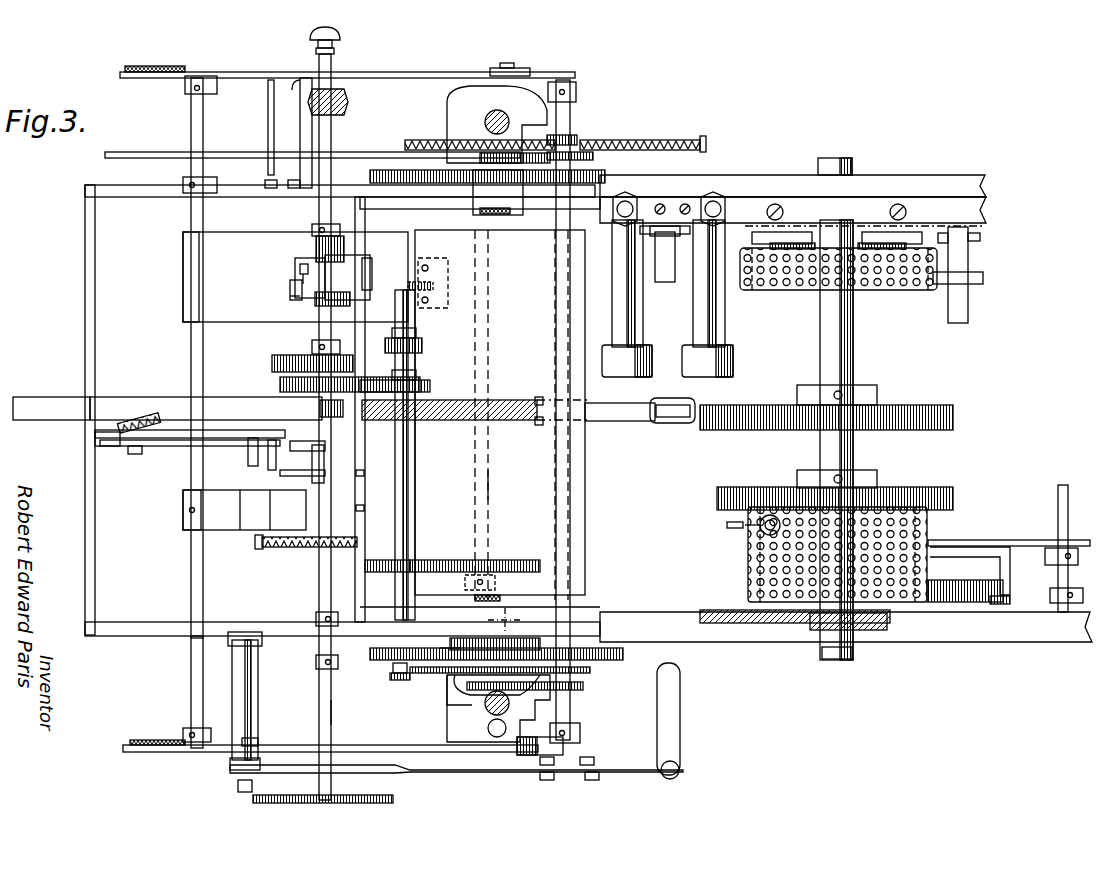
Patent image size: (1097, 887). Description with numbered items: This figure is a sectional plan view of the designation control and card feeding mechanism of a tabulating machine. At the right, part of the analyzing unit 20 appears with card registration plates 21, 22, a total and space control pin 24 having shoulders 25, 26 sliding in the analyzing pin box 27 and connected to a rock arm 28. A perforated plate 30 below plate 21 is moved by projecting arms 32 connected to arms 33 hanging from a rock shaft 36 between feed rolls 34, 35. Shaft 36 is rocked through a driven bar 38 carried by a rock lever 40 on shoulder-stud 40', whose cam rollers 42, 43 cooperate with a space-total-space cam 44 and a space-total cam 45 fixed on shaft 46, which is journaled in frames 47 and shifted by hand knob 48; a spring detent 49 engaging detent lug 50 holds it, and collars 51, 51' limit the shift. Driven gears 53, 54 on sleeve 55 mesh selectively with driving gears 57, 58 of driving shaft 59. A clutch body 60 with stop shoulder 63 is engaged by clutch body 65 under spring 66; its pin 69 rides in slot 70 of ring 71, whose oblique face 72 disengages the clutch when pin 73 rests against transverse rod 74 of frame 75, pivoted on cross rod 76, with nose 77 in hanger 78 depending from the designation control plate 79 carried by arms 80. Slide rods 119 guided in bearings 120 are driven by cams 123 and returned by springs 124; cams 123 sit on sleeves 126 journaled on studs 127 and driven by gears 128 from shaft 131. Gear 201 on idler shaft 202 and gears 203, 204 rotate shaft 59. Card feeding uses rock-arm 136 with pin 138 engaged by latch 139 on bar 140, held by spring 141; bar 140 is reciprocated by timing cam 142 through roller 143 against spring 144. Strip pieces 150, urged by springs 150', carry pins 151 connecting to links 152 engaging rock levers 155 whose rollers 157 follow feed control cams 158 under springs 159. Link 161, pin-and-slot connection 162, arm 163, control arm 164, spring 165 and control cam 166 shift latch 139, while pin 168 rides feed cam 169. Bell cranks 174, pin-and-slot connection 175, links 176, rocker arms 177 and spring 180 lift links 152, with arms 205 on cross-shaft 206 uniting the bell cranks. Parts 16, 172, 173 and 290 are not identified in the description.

The rod 16 is at (191, 692).
The analyzing unit 20 is at (871, 440).
The card registration plate 21 is at (782, 290).
The card registration plate 22 is at (920, 560).
The total and space control pin 24 is at (740, 526).
The shoulder 25 is at (760, 530).
The shoulder 26 is at (764, 532).
The analyzing pin box 27 is at (910, 604).
The rock arm 28 is at (985, 540).
The perforated plate 30 is at (973, 248).
The projecting arms 32 is at (737, 233).
The arms 33 is at (648, 232).
The feed roll 34 is at (640, 332).
The feed roll 35 is at (690, 366).
The rock shaft 36 is at (665, 283).
The driven bar 38 is at (450, 775).
The rock lever 40 is at (260, 774).
The shoulder-stud 40' is at (261, 696).
The cam roller 42 is at (237, 786).
The cam roller 43 is at (257, 744).
The space-total-space cam 44 is at (390, 798).
The space-total cam 45 is at (385, 745).
The shaft 46 is at (332, 713).
The frames 47 is at (150, 192).
The hand knob 48 is at (345, 40).
The spring detent 49 is at (275, 115).
The detent lug 50 is at (349, 103).
The collar 51 is at (310, 613).
The collar 51' is at (309, 664).
The driven gear 53 is at (272, 360).
The driven gear 54 is at (282, 385).
The sleeve 55 is at (320, 329).
The driving gear 57 is at (422, 345).
The driving gear 58 is at (430, 385).
The driving shaft 59 is at (415, 490).
The clutch body 60 is at (350, 299).
The annular stop shoulder 63 is at (295, 292).
The clutch body 65 is at (318, 242).
The spring 66 is at (320, 240).
The pin 69 is at (300, 270).
The slot 70 is at (298, 262).
The ring 71 is at (290, 298).
The oblique face 72 is at (302, 280).
The pin 73 is at (360, 274).
The transverse rod 74 is at (350, 263).
The frame 75 is at (224, 245).
The cross rod 76 is at (191, 352).
The nose 77 is at (435, 286).
The U-shaped hanger 78 is at (440, 268).
The designation control plate 79 is at (500, 415).
The arms 80 is at (497, 215).
The operating slide rods 119 is at (485, 120).
The upper bearing 120 is at (448, 133).
The operating cam 123 is at (577, 142).
The coil springs 124 is at (470, 88).
The sleeves 126 is at (446, 683).
The studs 127 is at (520, 620).
The gears 128 is at (600, 183).
The shaft 131 is at (852, 160).
The rock-arm 136 is at (206, 408).
The pin 138 is at (250, 456).
The latch 139 is at (175, 430).
The bar 140 is at (35, 420).
The spring 141 is at (135, 415).
The card feed timing cam 142 is at (745, 430).
The roller 143 is at (667, 424).
The coil spring 144 is at (490, 422).
The strip pieces 150 is at (498, 192).
The springs 150' is at (696, 135).
The projecting pins 151 is at (495, 153).
The links 152 is at (230, 151).
The rock levers 155 is at (398, 681).
The cam rollers 157 is at (392, 668).
The feed control cams 158 is at (585, 150).
The springs 159 is at (600, 142).
The link 161 is at (115, 446).
The pin and slot connection 162 is at (135, 455).
The arm 163 is at (158, 447).
The control arm 164 is at (222, 529).
The spring 165 is at (280, 548).
The control cam 166 is at (371, 507).
The pin 168 is at (312, 463).
The feed cam 169 is at (360, 470).
The bracket 172 is at (306, 436).
The peg 173 is at (268, 466).
The bell cranks 174 is at (295, 133).
The pin and slot connection 175 is at (527, 70).
The links 176 is at (250, 72).
The rocker arms 177 is at (208, 80).
The spring 180 is at (168, 80).
The gear 201 is at (440, 648).
The idler shaft 202 is at (489, 490).
The gear 203 is at (540, 560).
The gear 204 is at (386, 555).
The arms 205 is at (575, 86).
The cross-shaft 206 is at (575, 720).
The gear 290 is at (548, 645).